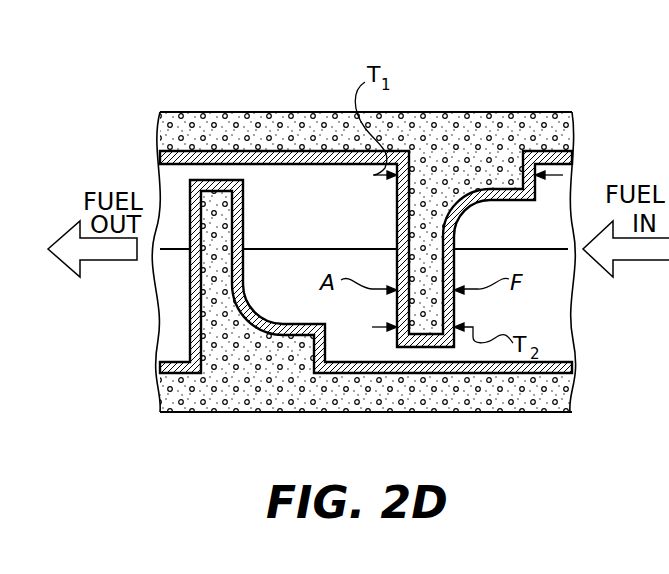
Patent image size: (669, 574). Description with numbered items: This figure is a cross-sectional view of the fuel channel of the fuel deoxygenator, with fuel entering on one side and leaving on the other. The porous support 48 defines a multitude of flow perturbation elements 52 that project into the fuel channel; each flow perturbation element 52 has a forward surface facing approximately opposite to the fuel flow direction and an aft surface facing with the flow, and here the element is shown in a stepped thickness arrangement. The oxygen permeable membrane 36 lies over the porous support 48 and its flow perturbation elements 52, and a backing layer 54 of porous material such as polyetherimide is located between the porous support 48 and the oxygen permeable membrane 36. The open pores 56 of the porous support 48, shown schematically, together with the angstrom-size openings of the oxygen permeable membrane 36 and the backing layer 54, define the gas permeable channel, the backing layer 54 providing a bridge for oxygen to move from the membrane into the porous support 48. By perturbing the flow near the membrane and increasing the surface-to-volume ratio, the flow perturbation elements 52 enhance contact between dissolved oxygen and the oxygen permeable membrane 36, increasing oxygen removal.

The oxygen permeable membrane 36 is at (295, 163).
The porous support 48 is at (232, 130).
The flow perturbation element 52 is at (250, 231).
The backing layer 54 is at (177, 144).
The open pores 56 is at (485, 142).